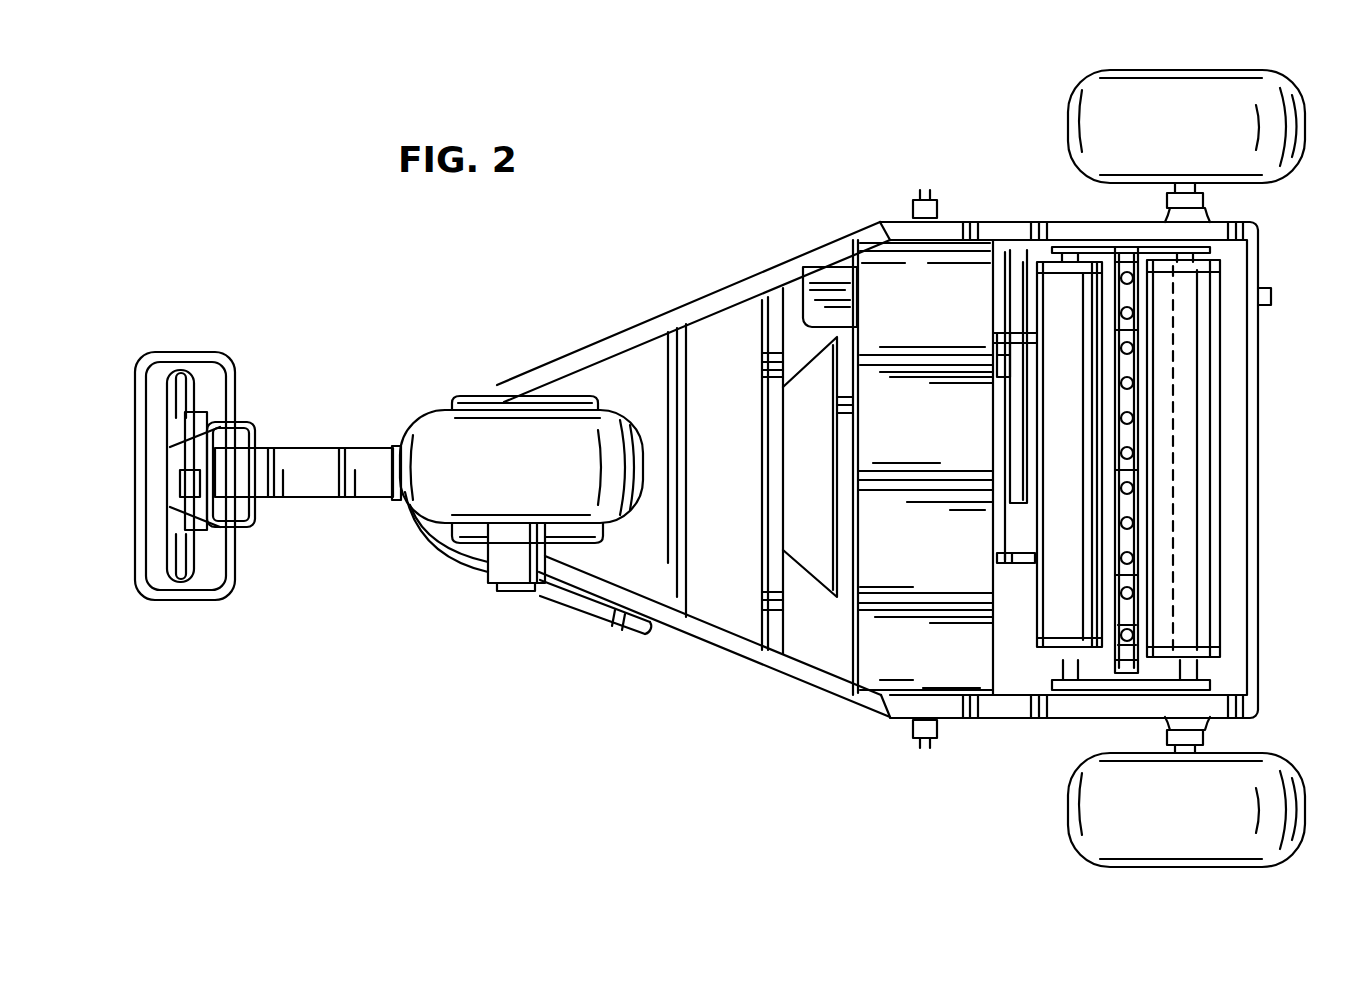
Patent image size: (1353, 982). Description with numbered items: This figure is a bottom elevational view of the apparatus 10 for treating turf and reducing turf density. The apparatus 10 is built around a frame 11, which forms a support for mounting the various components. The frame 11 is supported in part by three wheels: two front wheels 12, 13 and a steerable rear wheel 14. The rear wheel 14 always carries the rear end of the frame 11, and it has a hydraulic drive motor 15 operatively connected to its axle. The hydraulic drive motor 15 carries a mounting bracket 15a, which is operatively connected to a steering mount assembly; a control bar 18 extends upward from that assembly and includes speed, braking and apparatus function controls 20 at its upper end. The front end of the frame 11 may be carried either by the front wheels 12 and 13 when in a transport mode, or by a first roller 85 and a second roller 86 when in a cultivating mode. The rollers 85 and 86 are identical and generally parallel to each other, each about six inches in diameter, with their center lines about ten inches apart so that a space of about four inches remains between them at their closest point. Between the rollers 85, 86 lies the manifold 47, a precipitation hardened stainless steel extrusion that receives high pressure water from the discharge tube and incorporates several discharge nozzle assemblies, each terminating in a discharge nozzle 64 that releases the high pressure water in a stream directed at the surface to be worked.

The apparatus 10 is at (752, 192).
The frame 11 is at (697, 306).
The front wheel 12 is at (1228, 852).
The front wheel 13 is at (1212, 70).
The steerable rear wheel 14 is at (424, 430).
The hydraulic drive motor 15 is at (506, 590).
The mounting bracket 15a is at (470, 556).
The control bar 18 is at (330, 448).
The speed, braking and apparatus function controls 20 is at (186, 352).
The manifold 47 is at (1118, 288).
The discharge nozzle 64 is at (1127, 642).
The first roller 85 is at (1052, 652).
The second roller 86 is at (1225, 640).